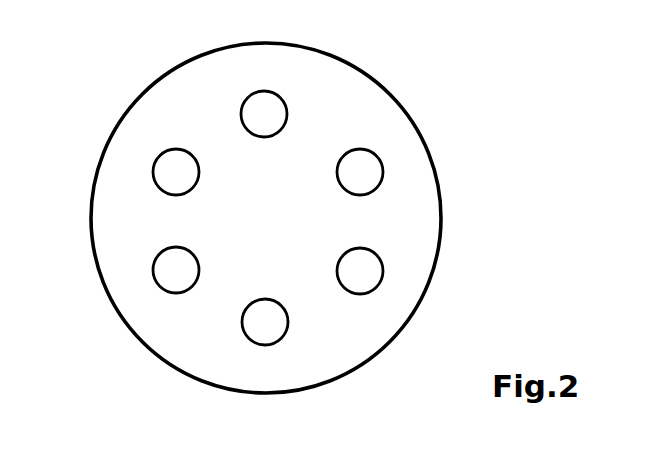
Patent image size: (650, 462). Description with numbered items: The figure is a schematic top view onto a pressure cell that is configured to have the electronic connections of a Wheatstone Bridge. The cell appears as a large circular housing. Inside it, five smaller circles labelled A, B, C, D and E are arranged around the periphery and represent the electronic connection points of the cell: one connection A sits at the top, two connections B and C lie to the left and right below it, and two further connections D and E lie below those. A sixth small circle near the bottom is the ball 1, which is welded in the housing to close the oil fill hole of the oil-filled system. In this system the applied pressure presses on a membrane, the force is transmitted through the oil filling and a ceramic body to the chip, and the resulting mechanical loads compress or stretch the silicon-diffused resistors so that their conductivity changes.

The ball 1 is at (245, 220).
The contact A is at (264, 114).
The contact B is at (176, 172).
The contact C is at (360, 172).
The contact D is at (176, 270).
The contact E is at (360, 271).